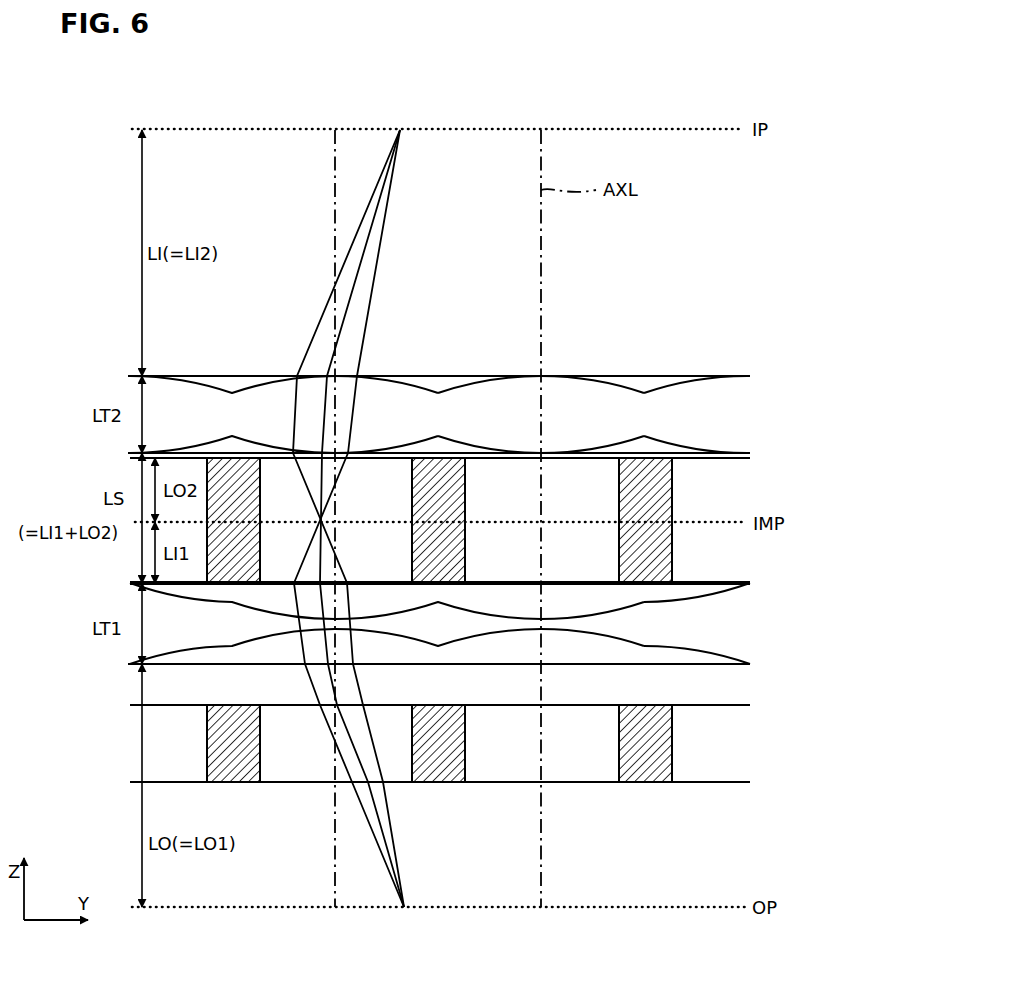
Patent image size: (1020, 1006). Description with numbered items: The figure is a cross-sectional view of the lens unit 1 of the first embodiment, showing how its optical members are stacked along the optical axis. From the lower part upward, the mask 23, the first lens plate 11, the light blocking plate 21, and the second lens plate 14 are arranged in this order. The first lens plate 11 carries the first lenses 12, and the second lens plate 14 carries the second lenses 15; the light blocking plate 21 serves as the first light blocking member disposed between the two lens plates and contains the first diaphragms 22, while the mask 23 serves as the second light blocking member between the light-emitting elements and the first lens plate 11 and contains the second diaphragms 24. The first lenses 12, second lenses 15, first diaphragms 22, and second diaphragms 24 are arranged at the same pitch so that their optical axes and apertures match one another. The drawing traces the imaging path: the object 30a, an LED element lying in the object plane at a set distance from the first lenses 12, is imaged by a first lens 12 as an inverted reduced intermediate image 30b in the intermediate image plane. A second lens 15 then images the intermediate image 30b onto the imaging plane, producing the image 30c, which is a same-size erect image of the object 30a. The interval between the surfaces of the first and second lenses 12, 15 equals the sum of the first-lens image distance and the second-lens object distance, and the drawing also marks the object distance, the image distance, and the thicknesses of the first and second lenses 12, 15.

The lens unit 1 is at (792, 370).
The first lens plate 11 is at (732, 665).
The first lens 12 is at (710, 652).
The second lens plate 14 is at (630, 380).
The second lens 15 is at (600, 392).
The light blocking plate 21 is at (673, 488).
The first diaphragm 22 is at (602, 560).
The mask 23 is at (645, 785).
The second diaphragm 24 is at (576, 762).
The object 30a is at (404, 907).
The intermediate image 30b is at (320, 522).
The image 30c is at (400, 130).